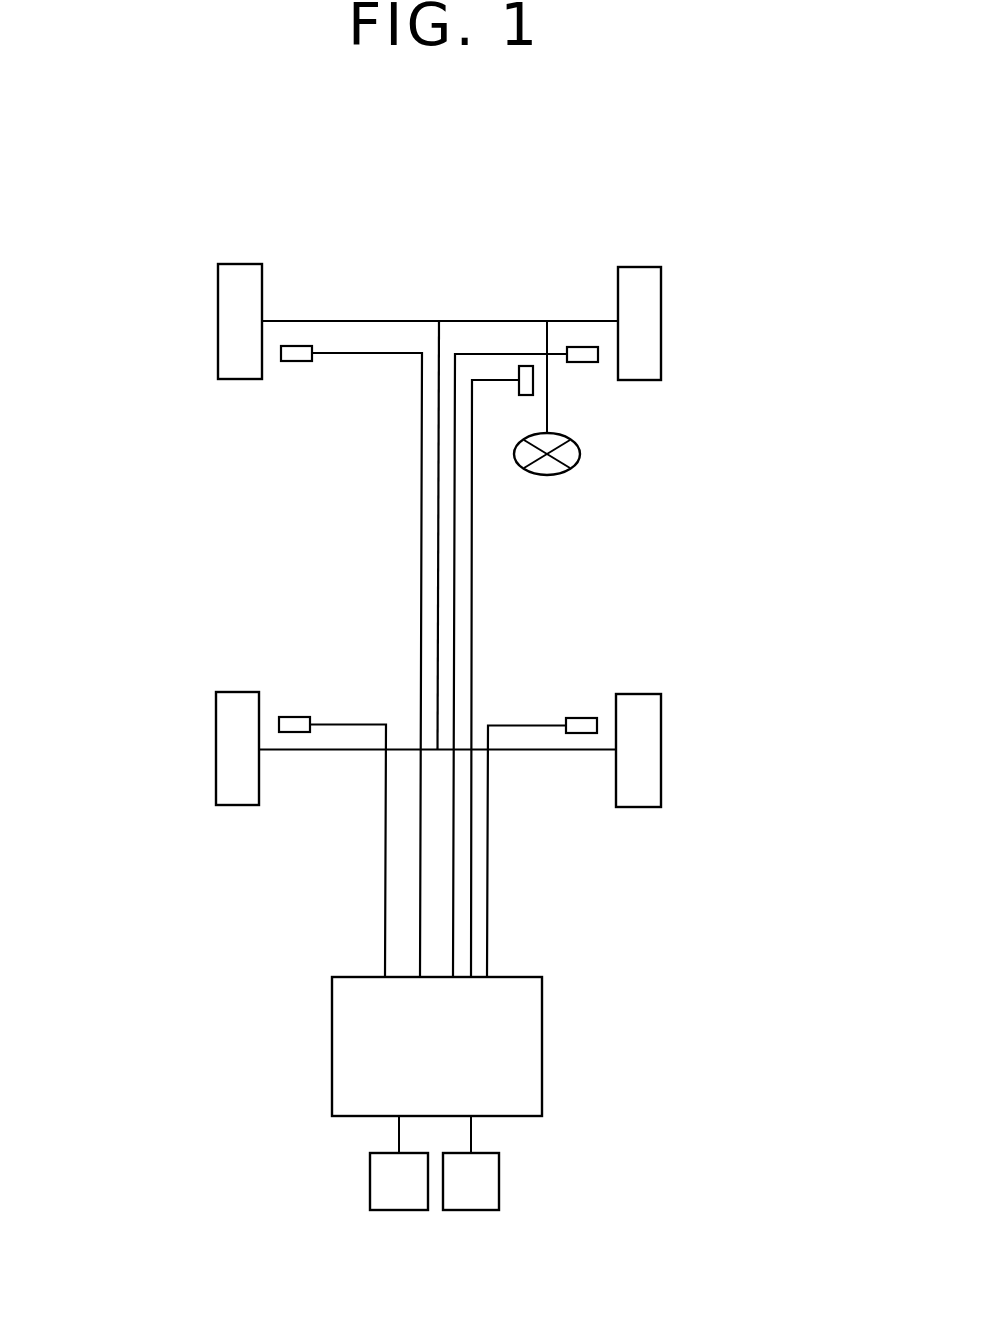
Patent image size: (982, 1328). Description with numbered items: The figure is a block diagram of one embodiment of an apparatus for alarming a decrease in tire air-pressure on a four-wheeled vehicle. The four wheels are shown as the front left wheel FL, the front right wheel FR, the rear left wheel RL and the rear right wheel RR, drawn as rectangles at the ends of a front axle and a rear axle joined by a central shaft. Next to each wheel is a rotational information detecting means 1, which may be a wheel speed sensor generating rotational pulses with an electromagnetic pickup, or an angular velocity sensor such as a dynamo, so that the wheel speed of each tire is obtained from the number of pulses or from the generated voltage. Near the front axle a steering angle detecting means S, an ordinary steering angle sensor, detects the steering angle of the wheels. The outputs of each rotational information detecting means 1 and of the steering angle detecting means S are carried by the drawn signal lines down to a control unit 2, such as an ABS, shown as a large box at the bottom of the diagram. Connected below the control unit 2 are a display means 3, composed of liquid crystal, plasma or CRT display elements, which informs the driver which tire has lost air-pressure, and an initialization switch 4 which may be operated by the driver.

The rotational information detecting means 1 is at (296, 357).
The control unit 2 is at (508, 1062).
The display means 3 is at (483, 1183).
The initialization switch 4 is at (388, 1183).
The steering angle detecting means S is at (529, 386).
The front left wheel FL is at (232, 313).
The front right wheel FR is at (647, 314).
The rear left wheel RL is at (232, 742).
The rear right wheel RR is at (645, 744).